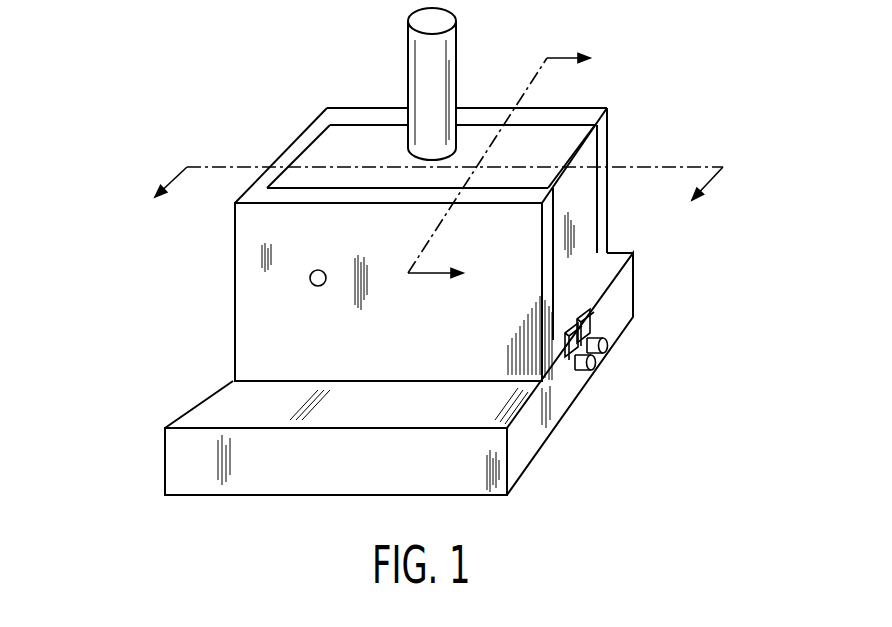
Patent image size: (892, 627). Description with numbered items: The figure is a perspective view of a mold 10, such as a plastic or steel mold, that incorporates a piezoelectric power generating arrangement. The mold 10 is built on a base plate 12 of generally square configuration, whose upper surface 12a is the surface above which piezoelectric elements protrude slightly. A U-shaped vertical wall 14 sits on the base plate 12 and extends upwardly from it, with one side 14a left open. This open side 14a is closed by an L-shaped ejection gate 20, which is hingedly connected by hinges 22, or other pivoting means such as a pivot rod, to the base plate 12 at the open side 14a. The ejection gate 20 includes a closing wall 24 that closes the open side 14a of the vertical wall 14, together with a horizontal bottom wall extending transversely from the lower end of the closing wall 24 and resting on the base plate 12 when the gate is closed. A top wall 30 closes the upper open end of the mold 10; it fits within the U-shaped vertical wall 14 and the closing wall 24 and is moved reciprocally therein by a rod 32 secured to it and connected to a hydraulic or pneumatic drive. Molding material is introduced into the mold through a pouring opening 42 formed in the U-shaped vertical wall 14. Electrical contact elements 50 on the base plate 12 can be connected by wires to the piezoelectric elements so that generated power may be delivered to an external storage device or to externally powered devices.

The mold 10 is at (416, 253).
The base plate 12 is at (351, 377).
The upper surface of base plate 12a is at (203, 404).
The U-shaped vertical wall 14 is at (395, 220).
The open side of U-shaped vertical wall 14a is at (597, 133).
The L-shaped ejection gate 20 is at (578, 200).
The hinges 22 is at (590, 308).
The closing wall 24 is at (582, 262).
The top wall 30 is at (334, 136).
The rod 32 is at (408, 43).
The pouring opening 42 is at (310, 283).
The electrical contact elements 50 is at (593, 360).